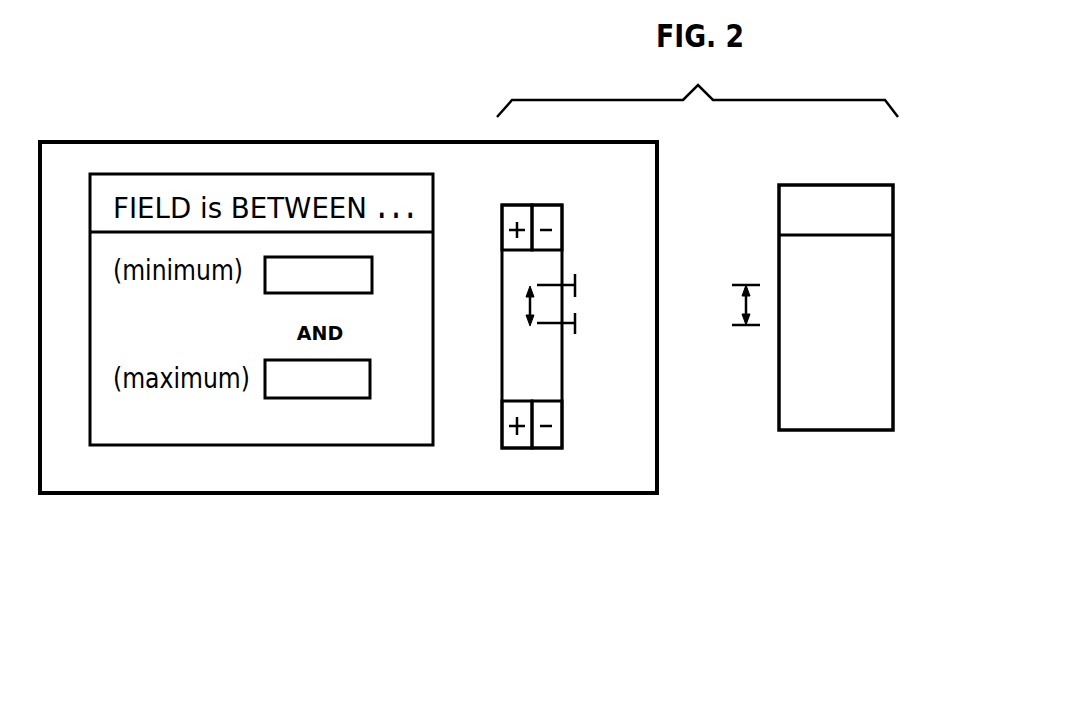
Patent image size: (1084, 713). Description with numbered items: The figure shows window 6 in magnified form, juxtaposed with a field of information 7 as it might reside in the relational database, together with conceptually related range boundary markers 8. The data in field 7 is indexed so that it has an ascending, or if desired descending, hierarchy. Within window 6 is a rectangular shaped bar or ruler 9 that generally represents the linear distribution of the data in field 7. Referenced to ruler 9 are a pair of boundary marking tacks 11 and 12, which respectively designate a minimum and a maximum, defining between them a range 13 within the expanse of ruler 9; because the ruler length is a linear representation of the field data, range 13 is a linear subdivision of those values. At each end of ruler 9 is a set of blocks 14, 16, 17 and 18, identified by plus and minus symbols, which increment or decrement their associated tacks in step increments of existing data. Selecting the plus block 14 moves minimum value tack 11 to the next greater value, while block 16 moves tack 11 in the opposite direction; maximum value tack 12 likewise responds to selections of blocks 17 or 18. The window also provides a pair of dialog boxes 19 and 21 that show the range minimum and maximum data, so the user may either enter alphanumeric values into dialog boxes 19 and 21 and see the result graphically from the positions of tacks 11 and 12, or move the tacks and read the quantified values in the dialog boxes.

The window 6 is at (268, 142).
The field of information 7 is at (818, 452).
The range boundary markers 8 is at (752, 326).
The bar or ruler 9 is at (502, 326).
The minimum value tack 11 is at (578, 281).
The maximum value tack 12 is at (577, 333).
The range 13 is at (530, 305).
The "+" block 14 is at (518, 205).
The "−" block 16 is at (540, 205).
The "+" block 17 is at (518, 448).
The "−" block 18 is at (545, 448).
The minimum dialog box 19 is at (372, 275).
The maximum dialog box 21 is at (370, 372).